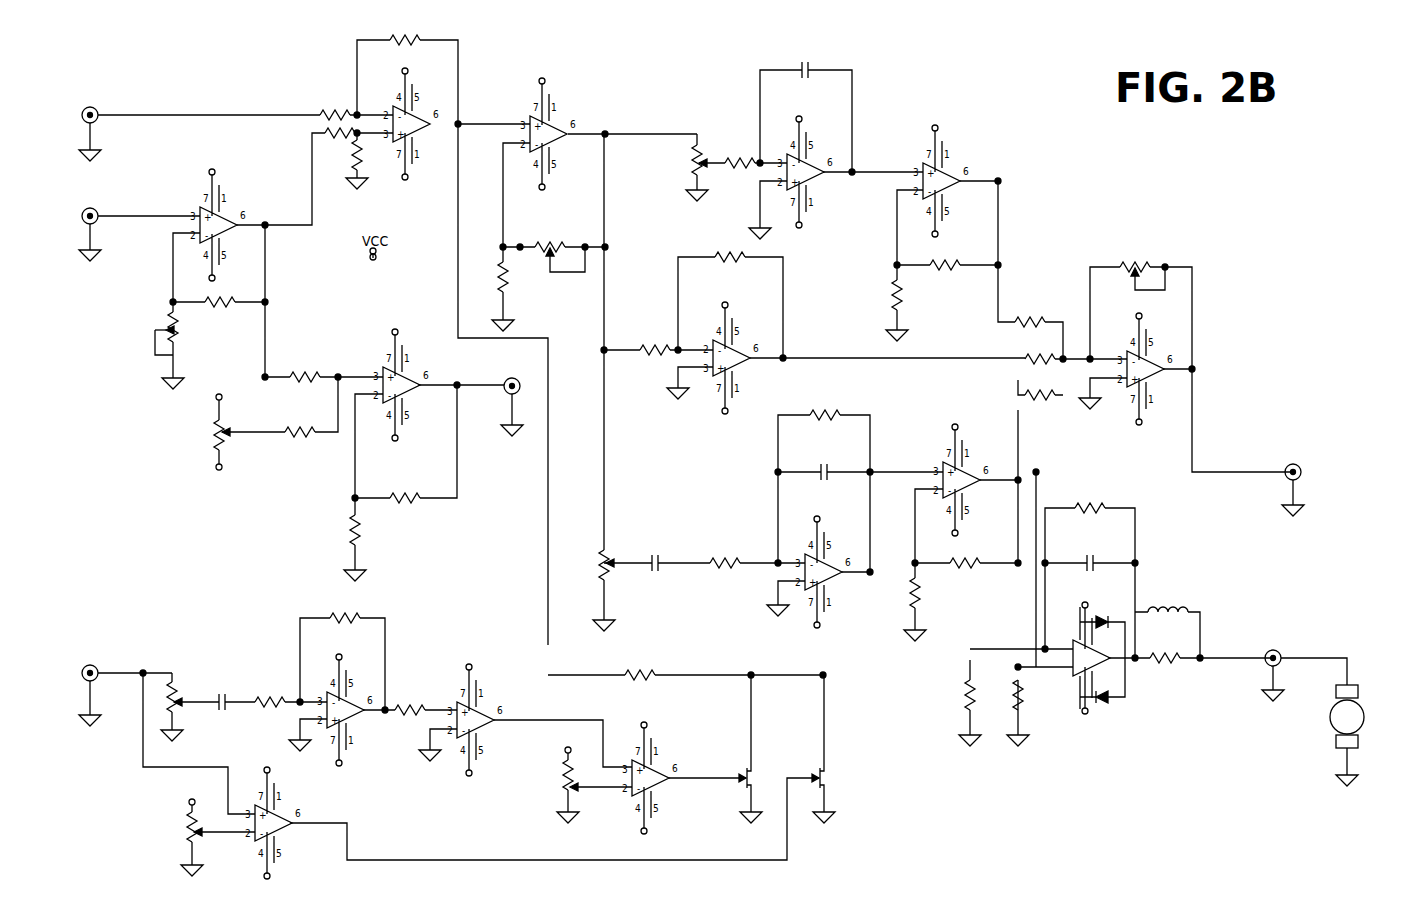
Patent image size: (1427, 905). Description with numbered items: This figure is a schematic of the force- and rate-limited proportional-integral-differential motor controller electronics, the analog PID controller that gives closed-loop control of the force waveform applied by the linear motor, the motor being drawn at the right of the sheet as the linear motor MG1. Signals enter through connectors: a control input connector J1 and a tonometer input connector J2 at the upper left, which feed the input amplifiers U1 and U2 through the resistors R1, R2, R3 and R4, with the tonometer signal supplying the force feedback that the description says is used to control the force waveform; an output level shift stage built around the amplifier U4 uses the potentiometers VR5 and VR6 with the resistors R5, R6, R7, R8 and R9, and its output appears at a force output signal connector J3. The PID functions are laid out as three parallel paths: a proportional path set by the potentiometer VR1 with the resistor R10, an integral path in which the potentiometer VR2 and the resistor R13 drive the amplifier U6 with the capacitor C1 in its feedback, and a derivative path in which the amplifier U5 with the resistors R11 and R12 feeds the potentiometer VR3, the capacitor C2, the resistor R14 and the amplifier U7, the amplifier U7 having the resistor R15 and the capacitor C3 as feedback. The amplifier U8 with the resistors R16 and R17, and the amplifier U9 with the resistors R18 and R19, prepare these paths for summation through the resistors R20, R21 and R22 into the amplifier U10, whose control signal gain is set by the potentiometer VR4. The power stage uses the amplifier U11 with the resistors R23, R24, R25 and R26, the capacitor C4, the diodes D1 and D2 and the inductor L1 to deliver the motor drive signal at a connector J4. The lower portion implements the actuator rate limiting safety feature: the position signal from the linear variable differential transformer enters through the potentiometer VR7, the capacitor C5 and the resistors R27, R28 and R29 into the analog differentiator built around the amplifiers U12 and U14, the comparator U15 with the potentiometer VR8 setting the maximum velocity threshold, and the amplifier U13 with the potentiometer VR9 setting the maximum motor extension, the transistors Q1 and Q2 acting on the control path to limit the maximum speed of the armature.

The control input connector J1 is at (140, 114).
The tonometer input / LVDT position connector J2 is at (129, 447).
The force output / control output signal connector J3 is at (896, 420).
The motor drive signal connector J4 is at (1280, 646).
The LM741 op amp U1 is at (230, 225).
The LM741 op amp U2 is at (422, 124).
The LM741 op amp U4 is at (485, 260).
The LM741 op amp U5 is at (745, 358).
The LF351 op amp U6 is at (816, 172).
The LM741 op amp U7 is at (827, 573).
The LM741 op amp U8 is at (955, 180).
The LM741 op amp U9 is at (976, 479).
The LM741 op amp U10 is at (1157, 369).
The LM12CLK_TO power op amp U11 is at (1034, 659).
The LM741 op amp U12 is at (355, 711).
The LM741 op amp U13 is at (288, 823).
The LM741 op amp U14 is at (505, 742).
The LM741 op amp U15 is at (668, 778).
The resistor 1k R1 is at (335, 107).
The resistor 1k R2 is at (334, 141).
The resistor 470 R3 is at (371, 154).
The resistor 470 R4 is at (419, 32).
The resistor 47k R5 is at (223, 319).
The resistor 1k R6 is at (299, 368).
The resistor 1k R7 is at (298, 424).
The resistor 4k7 R8 is at (370, 528).
The resistor 3k3 R9 is at (410, 489).
The resistor 500 R10 is at (518, 277).
The resistor 10k R11 is at (654, 351).
The resistor 10k R12 is at (728, 254).
The resistor 150k R13 is at (738, 164).
The resistor 1k R14 is at (725, 564).
The resistor 10M R15 is at (825, 411).
The resistor 1k R16 is at (911, 297).
The resistor 3k3 R17 is at (956, 274).
The resistor 1k R18 is at (930, 594).
The resistor 2k7 R19 is at (976, 575).
The resistor 10k R20 is at (1043, 313).
The resistor 10k R21 is at (1041, 352).
The resistor 10k R22 is at (1047, 388).
The resistor 3k3 R23 is at (1090, 507).
The resistor 1k R24 is at (1031, 694).
The resistor 1.1k R25 is at (985, 694).
The resistor 2R2 R26 is at (1167, 661).
The resistor 1k R27 is at (410, 706).
The resistor 10M R28 is at (342, 616).
The resistor 1k R29 is at (460, 677).
The 5K proportional gain potentiometer VR1 is at (556, 237).
The 1K integral gain potentiometer VR2 is at (662, 157).
The 10k derivative gain potentiometer VR3 is at (673, 544).
The 10K control signal gain potentiometer VR4 is at (1164, 233).
The 50k potentiometer VR5 is at (182, 325).
The output level shift potentiometer VR6 is at (176, 433).
The position attenuator potentiometer VR7 is at (228, 680).
The max velocity threshold potentiometer VR8 is at (559, 761).
The max motor extension potentiometer VR9 is at (137, 819).
The capacitor 100n C1 is at (818, 64).
The capacitor 10n C2 is at (655, 564).
The capacitor 470p C3 is at (826, 470).
The capacitor 1n5 C4 is at (1090, 563).
The capacitor 10n C5 is at (225, 703).
The diode 1N4001 D1 is at (1104, 621).
The diode 1N4001 D2 is at (1109, 700).
The inductor 4uH L1 is at (1168, 605).
The TIS75 JFET Q1 is at (764, 776).
The TIS75 JFET Q2 is at (837, 776).
The linear motor MG1 is at (1367, 722).